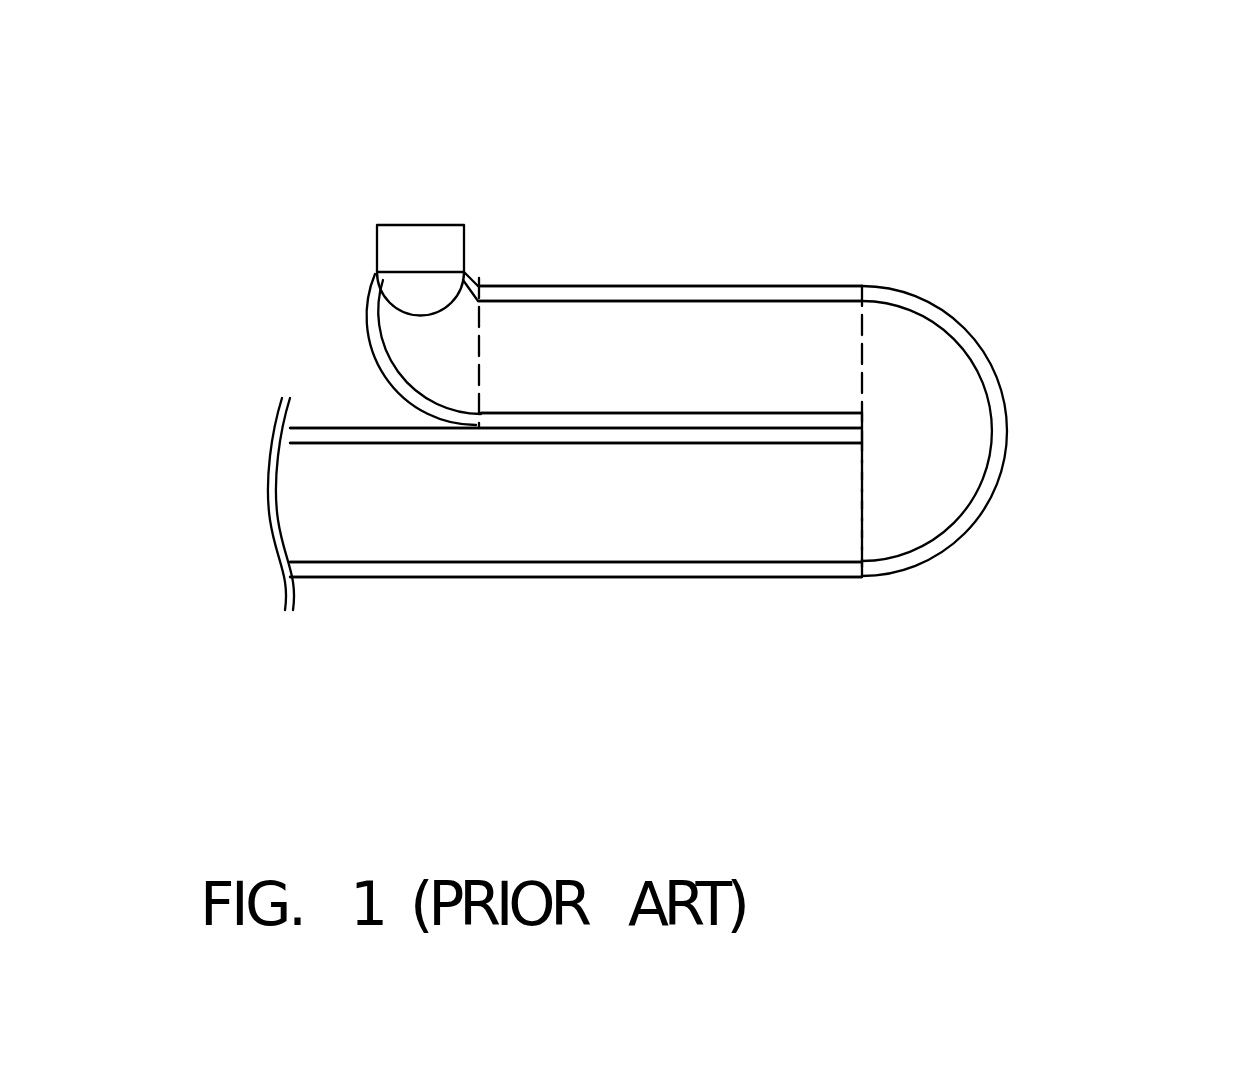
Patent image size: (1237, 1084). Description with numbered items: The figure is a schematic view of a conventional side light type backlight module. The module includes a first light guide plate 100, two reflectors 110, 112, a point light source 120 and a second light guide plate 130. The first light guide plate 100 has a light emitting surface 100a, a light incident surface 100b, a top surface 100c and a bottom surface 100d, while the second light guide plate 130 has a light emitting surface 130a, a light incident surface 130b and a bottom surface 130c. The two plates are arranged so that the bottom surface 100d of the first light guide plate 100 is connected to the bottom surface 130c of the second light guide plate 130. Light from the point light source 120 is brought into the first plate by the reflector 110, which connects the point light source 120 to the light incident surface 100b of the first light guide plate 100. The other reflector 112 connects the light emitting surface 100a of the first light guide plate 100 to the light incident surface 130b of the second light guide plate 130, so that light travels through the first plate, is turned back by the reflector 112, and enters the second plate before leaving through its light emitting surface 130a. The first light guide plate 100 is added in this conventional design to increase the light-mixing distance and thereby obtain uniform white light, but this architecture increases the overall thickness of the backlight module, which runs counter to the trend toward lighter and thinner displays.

The first light guide plate 100 is at (843, 165).
The light emitting surface 100a is at (862, 348).
The light incident surface 100b is at (507, 365).
The top surface 100c is at (687, 284).
The bottom surface 100d is at (585, 412).
The reflector 110 is at (383, 372).
The reflector 112 is at (1010, 431).
The point light source 120 is at (427, 285).
The second light guide plate 130 is at (733, 730).
The light emitting surface 130a is at (528, 577).
The light incident surface 130b is at (861, 500).
The bottom surface 130c is at (375, 446).